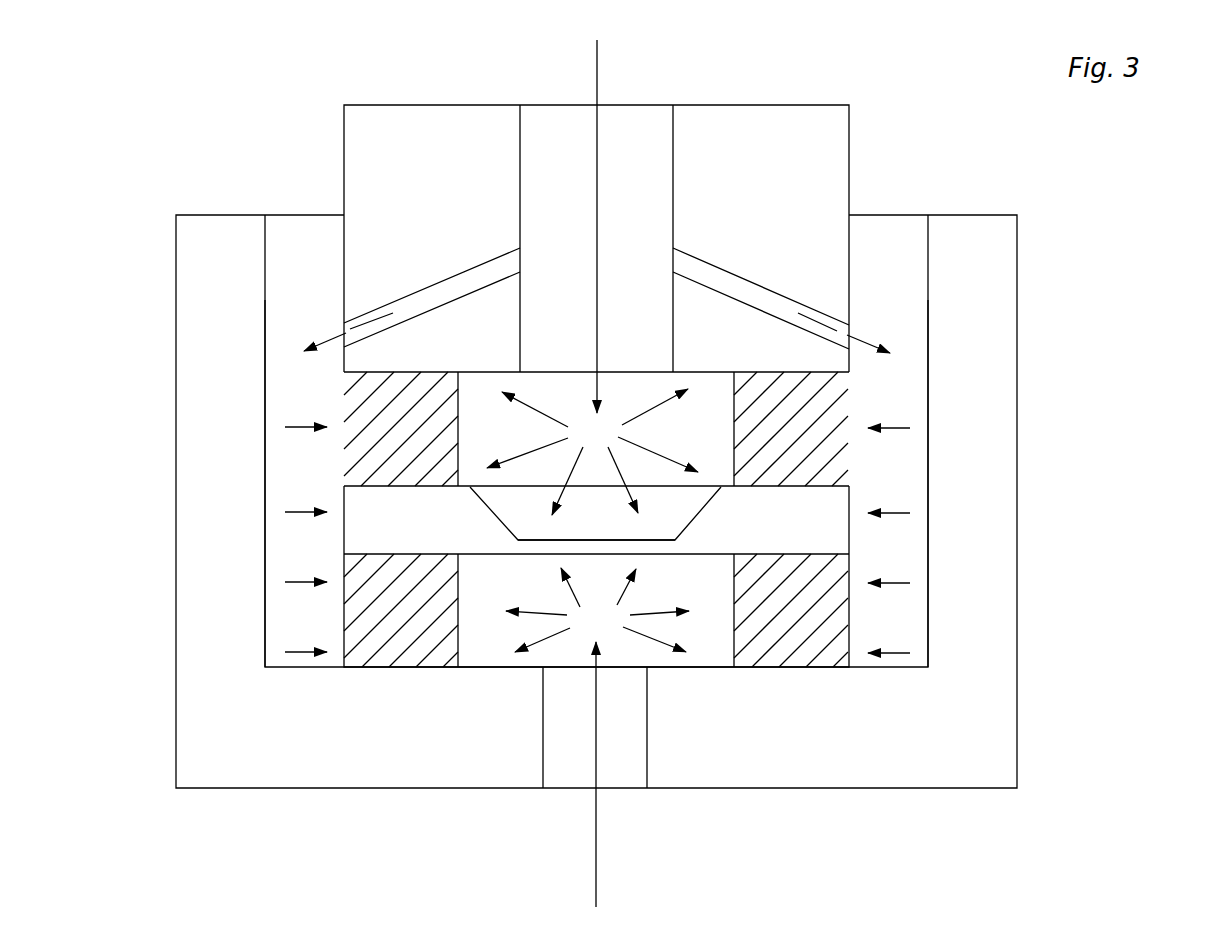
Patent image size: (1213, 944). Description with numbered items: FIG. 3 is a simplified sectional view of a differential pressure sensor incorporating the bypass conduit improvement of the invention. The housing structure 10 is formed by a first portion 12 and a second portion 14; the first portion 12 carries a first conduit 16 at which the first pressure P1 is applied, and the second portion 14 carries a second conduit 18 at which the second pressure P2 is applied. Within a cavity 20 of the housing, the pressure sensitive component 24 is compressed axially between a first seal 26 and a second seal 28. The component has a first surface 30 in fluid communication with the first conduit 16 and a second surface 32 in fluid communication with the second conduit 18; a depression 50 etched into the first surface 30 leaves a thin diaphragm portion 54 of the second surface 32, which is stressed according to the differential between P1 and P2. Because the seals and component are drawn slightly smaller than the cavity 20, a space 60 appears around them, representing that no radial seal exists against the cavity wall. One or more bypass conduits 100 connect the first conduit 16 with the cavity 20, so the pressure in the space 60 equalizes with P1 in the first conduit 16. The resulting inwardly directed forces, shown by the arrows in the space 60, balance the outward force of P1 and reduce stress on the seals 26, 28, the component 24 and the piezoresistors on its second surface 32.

The housing structure 10 is at (178, 133).
The first portion 12 is at (798, 123).
The second portion 14 is at (995, 723).
The first conduit 16 is at (643, 115).
The second conduit 18 is at (617, 777).
The cavity 20 is at (923, 360).
The pressure sensitive component 24 is at (837, 525).
The first seal 26 is at (838, 452).
The second seal 28 is at (837, 615).
The first surface 30 is at (507, 485).
The second surface 32 is at (490, 556).
The depression 50 is at (537, 518).
The diaphragm portion 54 is at (512, 548).
The space 60 is at (288, 228).
The bypass conduit 100 is at (445, 278).
The first pressure P1 is at (597, 272).
The second pressure P2 is at (594, 840).